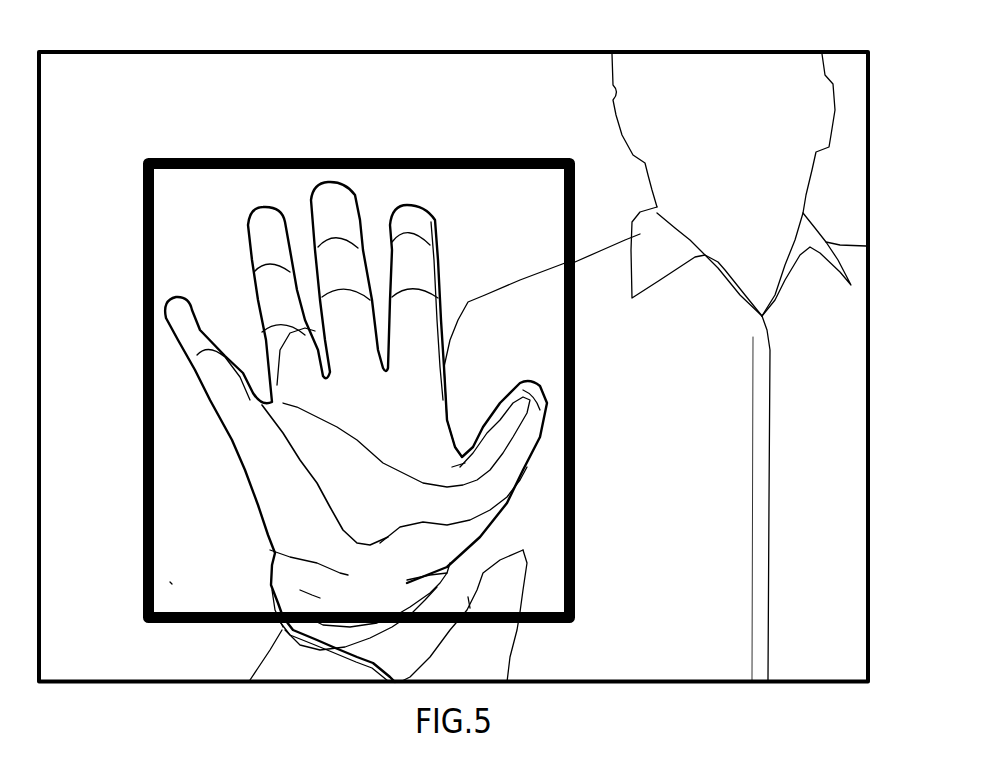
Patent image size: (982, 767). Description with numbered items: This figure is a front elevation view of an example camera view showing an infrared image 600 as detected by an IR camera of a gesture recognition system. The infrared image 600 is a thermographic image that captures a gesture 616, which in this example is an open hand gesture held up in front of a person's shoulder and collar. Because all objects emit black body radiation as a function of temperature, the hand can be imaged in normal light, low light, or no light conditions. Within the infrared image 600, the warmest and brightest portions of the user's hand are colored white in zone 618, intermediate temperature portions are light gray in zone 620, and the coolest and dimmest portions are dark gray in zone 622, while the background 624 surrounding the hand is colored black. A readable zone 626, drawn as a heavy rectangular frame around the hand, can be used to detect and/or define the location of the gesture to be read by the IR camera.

The infrared image 600 is at (101, 47).
The gesture 616 is at (413, 232).
The zone 618 is at (428, 293).
The zone 620 is at (322, 477).
The zone 622 is at (275, 553).
The background 624 is at (170, 582).
The readable zone 626 is at (577, 518).